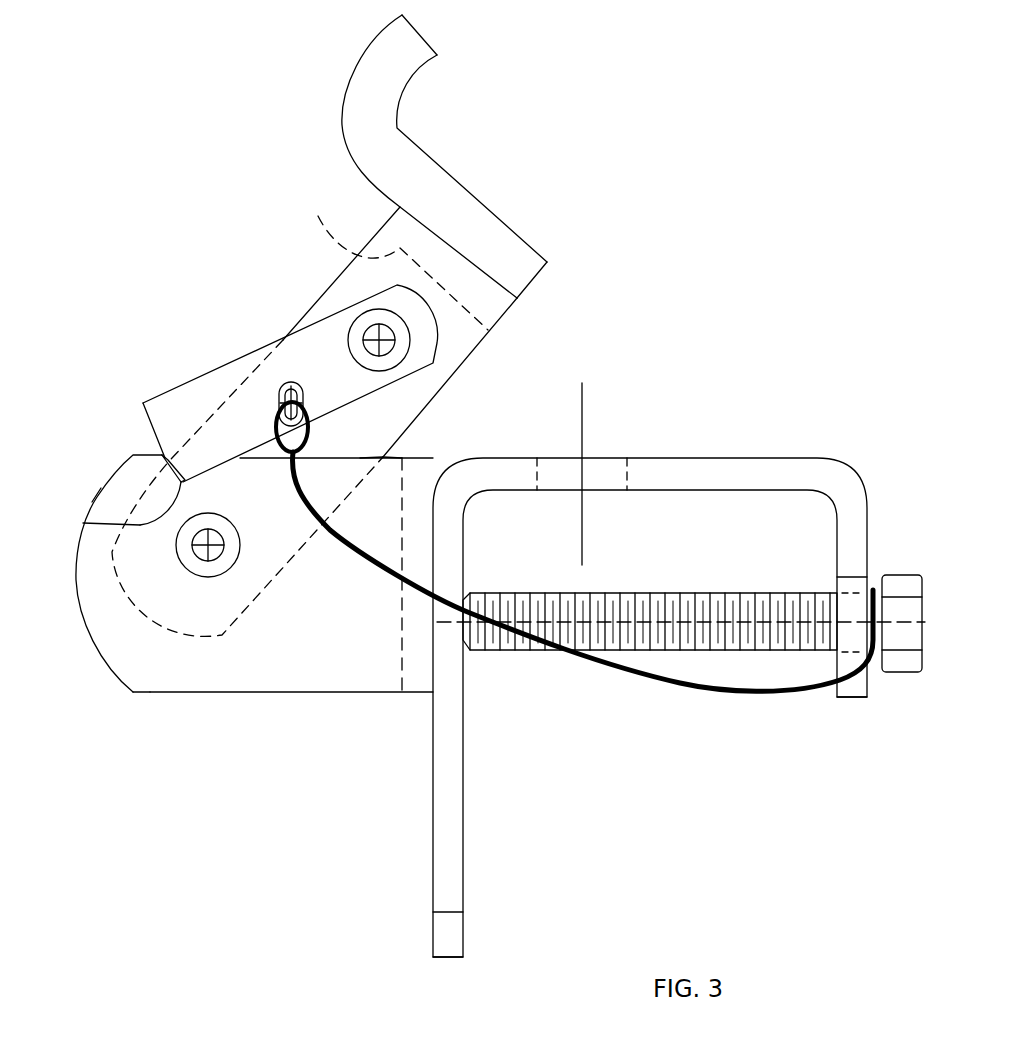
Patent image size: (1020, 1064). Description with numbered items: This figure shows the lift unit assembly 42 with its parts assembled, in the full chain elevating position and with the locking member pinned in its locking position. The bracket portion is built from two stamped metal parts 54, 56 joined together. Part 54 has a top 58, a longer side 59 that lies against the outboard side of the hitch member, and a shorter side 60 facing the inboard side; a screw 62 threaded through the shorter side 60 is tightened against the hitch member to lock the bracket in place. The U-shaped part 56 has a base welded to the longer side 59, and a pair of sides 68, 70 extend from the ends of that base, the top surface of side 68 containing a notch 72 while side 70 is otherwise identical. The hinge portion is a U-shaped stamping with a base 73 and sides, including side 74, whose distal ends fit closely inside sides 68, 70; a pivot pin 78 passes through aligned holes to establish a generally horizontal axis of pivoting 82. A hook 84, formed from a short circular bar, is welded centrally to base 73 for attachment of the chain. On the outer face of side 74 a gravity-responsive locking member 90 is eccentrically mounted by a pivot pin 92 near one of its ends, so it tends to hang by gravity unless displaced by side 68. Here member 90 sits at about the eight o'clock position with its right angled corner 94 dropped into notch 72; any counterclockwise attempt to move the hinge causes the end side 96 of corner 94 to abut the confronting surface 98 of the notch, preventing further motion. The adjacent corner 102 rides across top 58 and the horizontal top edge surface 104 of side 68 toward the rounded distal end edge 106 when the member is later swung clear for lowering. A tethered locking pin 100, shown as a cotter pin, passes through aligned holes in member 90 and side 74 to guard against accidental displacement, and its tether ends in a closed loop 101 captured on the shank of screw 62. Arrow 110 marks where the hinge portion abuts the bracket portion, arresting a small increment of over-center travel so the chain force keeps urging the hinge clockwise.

The lift unit assembly 42 is at (672, 302).
The stamped metal part 54 is at (823, 457).
The stamped metal part 56 is at (133, 692).
The top 58 is at (707, 468).
The longer side 59 is at (465, 863).
The shorter side 60 is at (850, 690).
The screw 62 is at (668, 593).
The side 68 is at (280, 680).
The side 70 is at (392, 692).
The notch 72 is at (193, 470).
The base 73 is at (340, 234).
The side 74 is at (413, 403).
The pivot pin 78 is at (207, 550).
The axis of pivoting 82 is at (127, 630).
The hook 84 is at (395, 112).
The gravity-responsive locking member 90 is at (243, 352).
The pivot pin 92 is at (390, 330).
The right angled corner 94 is at (83, 523).
The end side 96 is at (167, 488).
The confronting surface 98 is at (182, 457).
The tethered locking pin 100 is at (290, 383).
The closed loop 101 is at (872, 587).
The corner 102 is at (143, 403).
The horizontal top edge surface 104 is at (340, 457).
The rounded distal end edge 106 is at (97, 487).
The arrow 110 is at (393, 455).